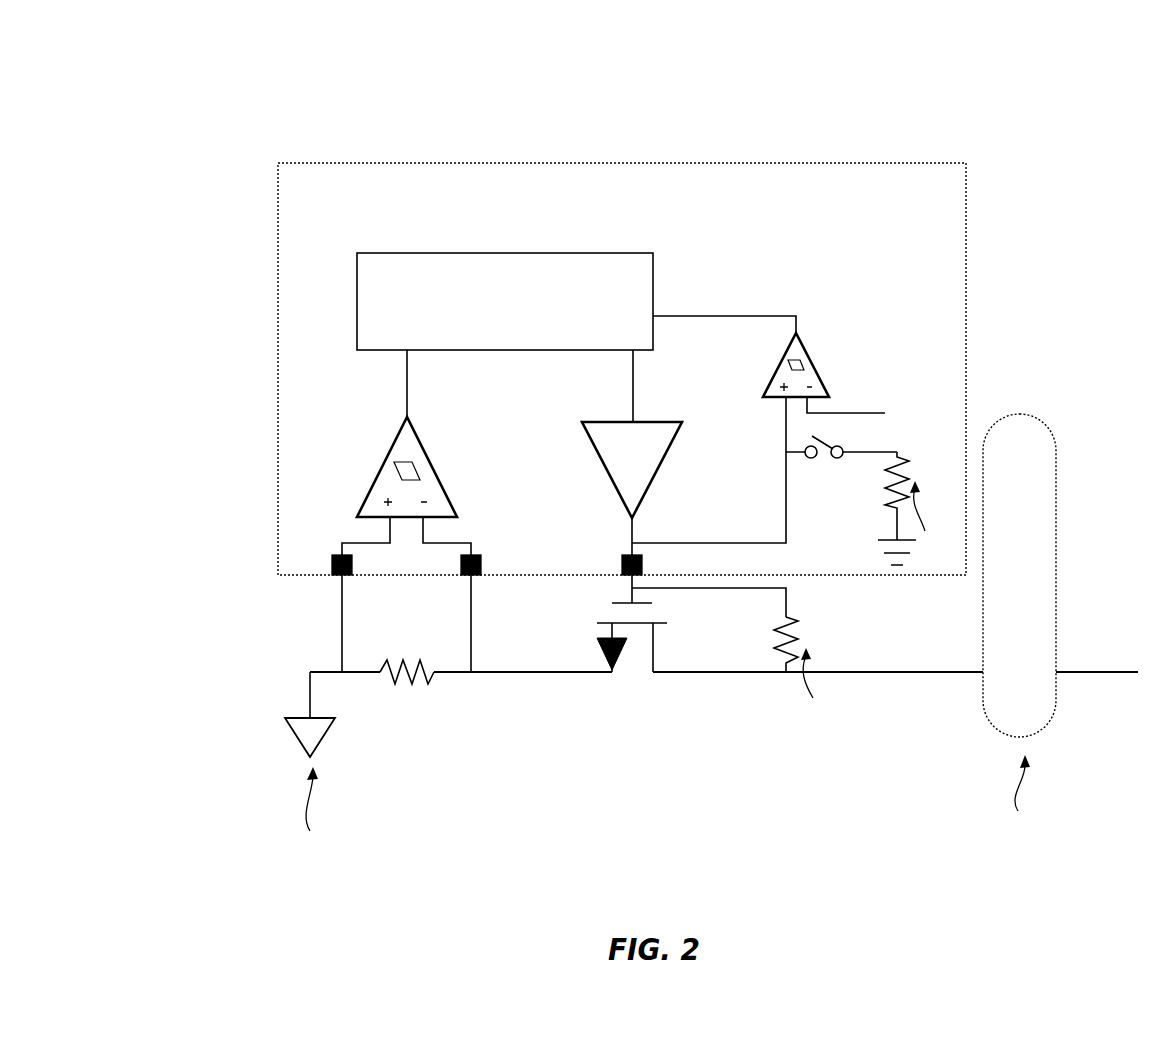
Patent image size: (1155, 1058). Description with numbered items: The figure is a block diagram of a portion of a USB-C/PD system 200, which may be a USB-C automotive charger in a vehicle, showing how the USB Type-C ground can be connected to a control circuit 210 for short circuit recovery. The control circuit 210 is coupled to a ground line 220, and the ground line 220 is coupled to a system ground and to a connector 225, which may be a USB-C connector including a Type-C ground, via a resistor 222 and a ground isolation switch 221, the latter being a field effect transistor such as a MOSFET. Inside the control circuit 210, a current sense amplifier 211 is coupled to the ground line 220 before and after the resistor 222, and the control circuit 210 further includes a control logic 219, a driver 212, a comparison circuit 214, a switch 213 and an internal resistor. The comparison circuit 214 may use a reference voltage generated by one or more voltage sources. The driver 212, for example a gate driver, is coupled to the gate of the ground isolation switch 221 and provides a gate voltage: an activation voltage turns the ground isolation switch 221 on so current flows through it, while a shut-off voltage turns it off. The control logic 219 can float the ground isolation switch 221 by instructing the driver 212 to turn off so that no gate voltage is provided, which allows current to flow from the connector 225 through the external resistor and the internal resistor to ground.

The USB-C/PD system 200 is at (80, 84).
The control circuit 210 is at (966, 195).
The current sense amplifier 211 is at (396, 438).
The driver 212 is at (591, 440).
The switch 213 is at (825, 476).
The comparison circuit 214 is at (814, 351).
The control logic 219 is at (505, 301).
The ground line 220 is at (911, 675).
The ground isolation switch 221 is at (628, 677).
The resistor 222 is at (408, 698).
The connector 225 is at (1019, 575).